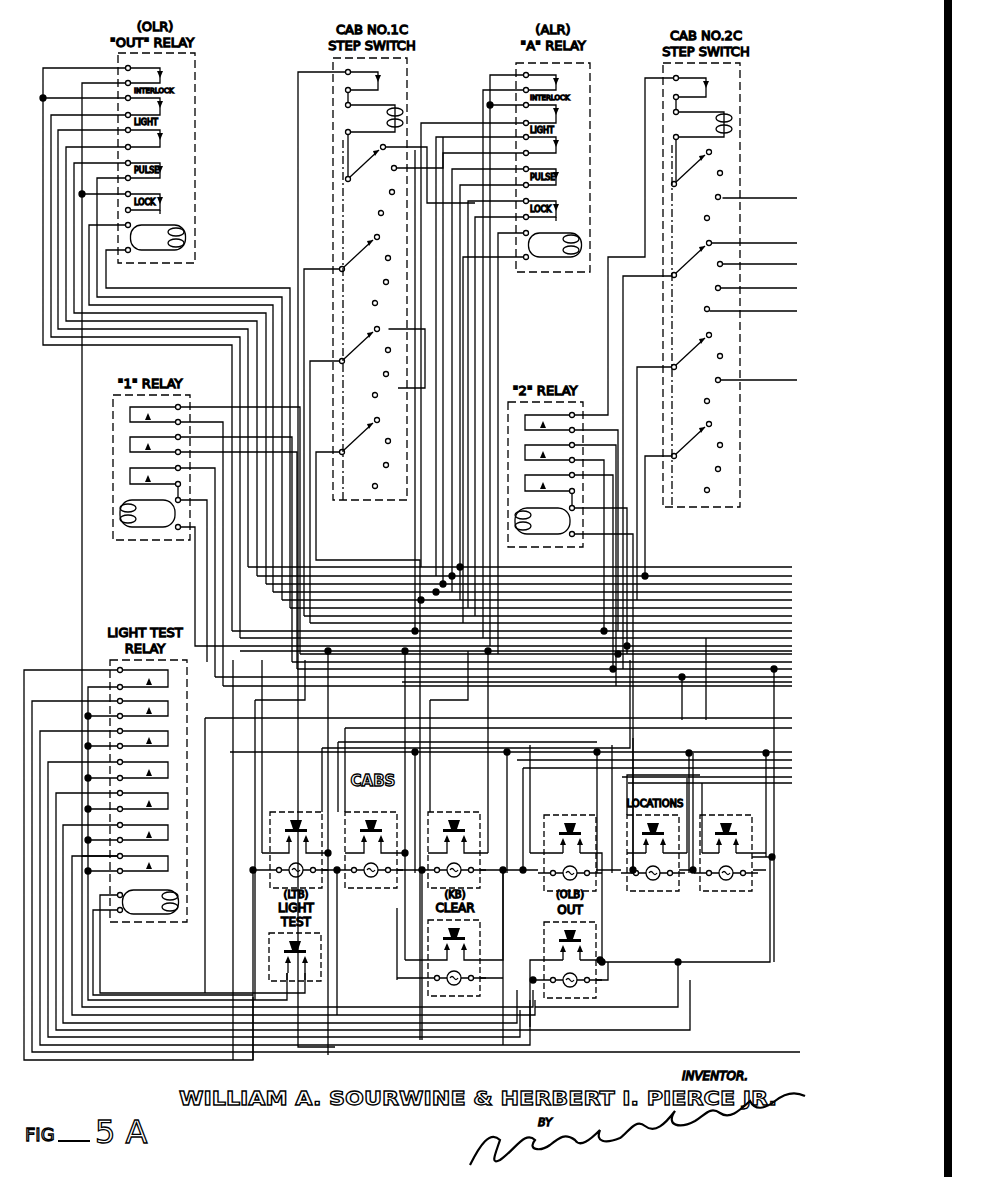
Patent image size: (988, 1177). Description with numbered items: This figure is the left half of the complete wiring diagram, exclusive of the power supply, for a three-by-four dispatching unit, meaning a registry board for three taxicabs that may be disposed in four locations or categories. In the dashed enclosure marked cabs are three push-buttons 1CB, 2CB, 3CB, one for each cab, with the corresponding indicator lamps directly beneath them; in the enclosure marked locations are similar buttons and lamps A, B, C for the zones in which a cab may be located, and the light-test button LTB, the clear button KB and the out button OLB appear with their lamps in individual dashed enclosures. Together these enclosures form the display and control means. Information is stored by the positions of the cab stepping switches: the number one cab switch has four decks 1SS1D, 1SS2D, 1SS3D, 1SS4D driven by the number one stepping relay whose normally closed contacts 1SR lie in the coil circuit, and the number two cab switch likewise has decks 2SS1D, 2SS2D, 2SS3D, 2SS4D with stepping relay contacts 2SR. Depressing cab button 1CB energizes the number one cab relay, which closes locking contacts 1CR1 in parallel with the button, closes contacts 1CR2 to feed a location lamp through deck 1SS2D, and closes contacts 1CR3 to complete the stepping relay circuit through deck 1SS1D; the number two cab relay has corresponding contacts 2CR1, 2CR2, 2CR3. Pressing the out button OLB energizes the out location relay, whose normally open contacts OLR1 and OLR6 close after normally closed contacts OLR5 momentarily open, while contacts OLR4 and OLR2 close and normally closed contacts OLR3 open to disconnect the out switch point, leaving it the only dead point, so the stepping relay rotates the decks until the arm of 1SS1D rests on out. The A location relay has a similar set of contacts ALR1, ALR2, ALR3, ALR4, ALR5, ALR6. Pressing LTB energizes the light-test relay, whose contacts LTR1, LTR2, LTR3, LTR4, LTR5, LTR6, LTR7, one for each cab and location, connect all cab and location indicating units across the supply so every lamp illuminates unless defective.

The out location relay normally closed contacts OLR5 is at (163, 74).
The out location relay normally open contacts OLR6 is at (163, 103).
The out location relay normally open contacts OLR4 is at (163, 135).
The out location relay normally closed contacts OLR3 is at (163, 160).
The out location relay normally open contacts OLR2 is at (163, 190).
The out location relay normally open contacts OLR1 is at (163, 212).
The number one stepping relay contacts 1SR is at (374, 81).
The first deck of number one stepping switch 1SS1D is at (357, 181).
The second deck of number one stepping switch 1SS2D is at (354, 271).
The third deck of number one stepping switch 1SS3D is at (354, 363).
The fourth deck of number one stepping switch 1SS4D is at (354, 454).
The A location relay contacts ALR5 is at (559, 82).
The A location relay contacts ALR6 is at (559, 110).
The A location relay contacts ALR4 is at (559, 140).
The A location relay contacts ALR3 is at (559, 166).
The A location relay contacts ALR2 is at (559, 195).
The A location relay contacts ALR1 is at (559, 218).
The number two stepping relay contacts 2SR is at (701, 88).
The first deck of number two stepping switch 2SS1D is at (685, 186).
The second deck of number two stepping switch 2SS2D is at (685, 277).
The third deck of number two stepping switch 2SS3D is at (685, 369).
The fourth deck of number two stepping switch 2SS4D is at (685, 458).
The number one cab relay third contacts 1CR3 is at (155, 411).
The number one cab relay second contacts 1CR2 is at (155, 441).
The number one cab relay first contacts 1CR1 is at (155, 473).
The number two cab relay third contacts 2CR3 is at (550, 419).
The number two cab relay second contacts 2CR2 is at (550, 449).
The number two cab relay first contacts 2CR1 is at (550, 479).
The light-test relay contacts LTR5 is at (143, 675).
The light-test relay contacts LTR6 is at (143, 705).
The light-test relay contacts LTR7 is at (143, 735).
The light-test relay contacts LTR3 is at (143, 767).
The light-test relay contacts LTR2 is at (143, 798).
The light-test relay contacts LTR1 is at (143, 829).
The light-test relay contacts LTR4 is at (143, 860).
The number one cab push-button 1CB is at (296, 844).
The number two cab push-button 2CB is at (371, 844).
The number three cab push-button 3CB is at (454, 844).
The location A button and lamp A is at (570, 853).
The location B button and lamp B is at (653, 853).
The location C button and lamp C is at (726, 853).
The light-test switch button LTB is at (295, 957).
The clear button KB is at (454, 958).
The out location button OLB is at (570, 960).